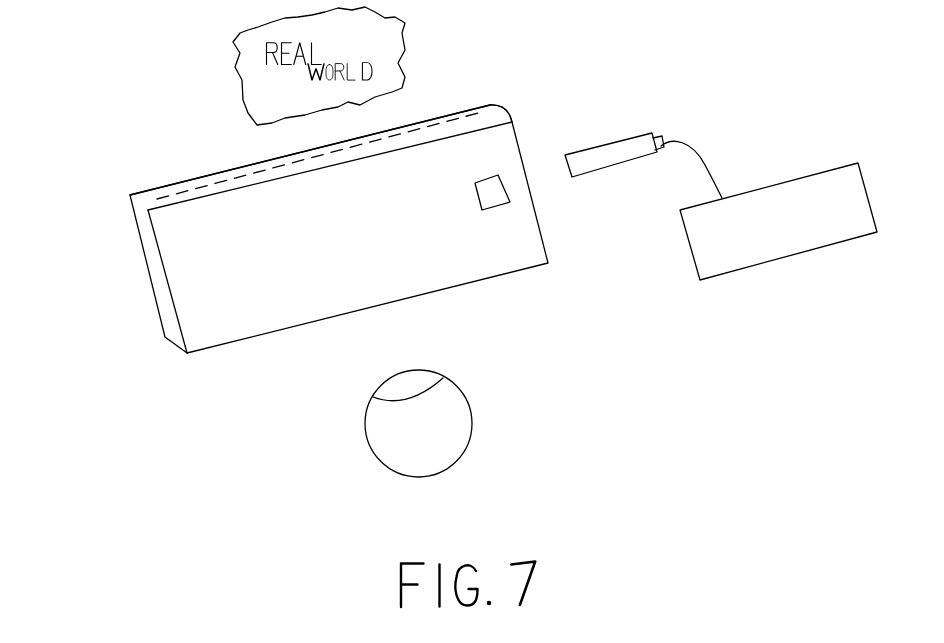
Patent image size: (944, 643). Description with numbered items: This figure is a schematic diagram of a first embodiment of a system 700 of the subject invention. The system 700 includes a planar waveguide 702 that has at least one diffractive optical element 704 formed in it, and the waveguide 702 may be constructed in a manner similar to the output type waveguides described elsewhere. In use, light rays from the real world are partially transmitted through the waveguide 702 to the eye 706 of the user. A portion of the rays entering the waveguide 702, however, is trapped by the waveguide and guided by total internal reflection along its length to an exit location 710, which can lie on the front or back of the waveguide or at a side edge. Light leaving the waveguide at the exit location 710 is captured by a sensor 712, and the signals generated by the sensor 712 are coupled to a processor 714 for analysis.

The system 700 is at (93, 150).
The planar waveguide 702 is at (155, 309).
The diffractive optical element 704 is at (466, 112).
The eye 706 is at (480, 430).
The exit location 710 is at (502, 182).
The sensor 712 is at (622, 133).
The processor 714 is at (778, 221).